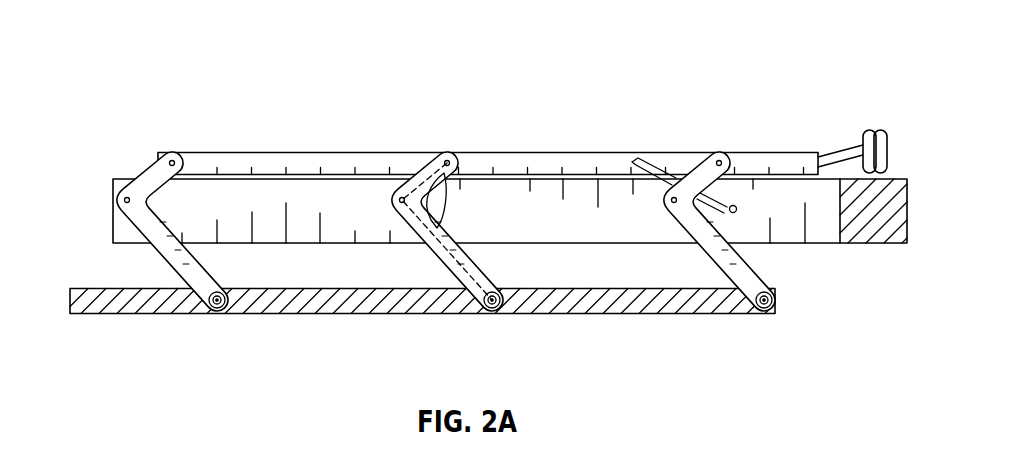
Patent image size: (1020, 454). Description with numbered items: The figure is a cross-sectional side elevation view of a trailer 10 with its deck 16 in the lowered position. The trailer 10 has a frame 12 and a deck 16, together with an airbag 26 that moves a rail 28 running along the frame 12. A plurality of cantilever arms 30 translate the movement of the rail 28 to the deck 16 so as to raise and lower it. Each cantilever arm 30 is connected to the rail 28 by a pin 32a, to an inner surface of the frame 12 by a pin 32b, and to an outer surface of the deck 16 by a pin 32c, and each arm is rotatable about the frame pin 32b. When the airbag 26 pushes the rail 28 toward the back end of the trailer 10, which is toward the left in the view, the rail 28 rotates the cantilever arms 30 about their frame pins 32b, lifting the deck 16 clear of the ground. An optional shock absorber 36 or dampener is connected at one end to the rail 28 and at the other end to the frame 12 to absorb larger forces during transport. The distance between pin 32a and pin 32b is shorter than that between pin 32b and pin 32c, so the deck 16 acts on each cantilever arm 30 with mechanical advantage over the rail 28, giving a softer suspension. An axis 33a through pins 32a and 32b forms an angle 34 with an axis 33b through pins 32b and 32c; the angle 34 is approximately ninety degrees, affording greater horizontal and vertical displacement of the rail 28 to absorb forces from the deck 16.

The trailer 10 is at (803, 44).
The frame 12 is at (762, 197).
The deck 16 is at (627, 310).
The airbag 26 is at (868, 130).
The rail 28 is at (290, 160).
The cantilever arm 30 is at (136, 234).
The pin 32a is at (171, 158).
The pin 32b is at (125, 200).
The pin 32c is at (218, 305).
The axis 33a is at (478, 133).
The axis 33b is at (481, 284).
The angle 34 is at (448, 204).
The shock absorber 36 is at (658, 166).